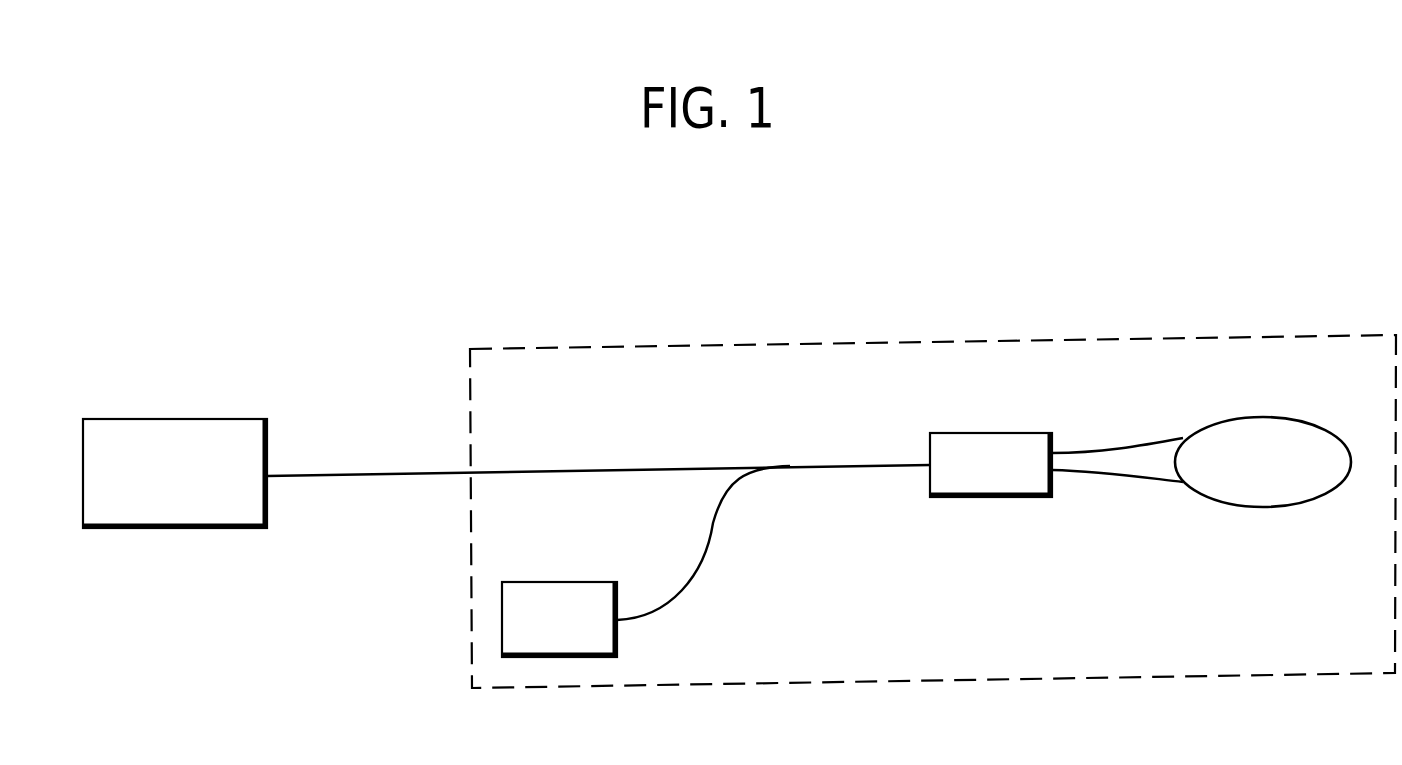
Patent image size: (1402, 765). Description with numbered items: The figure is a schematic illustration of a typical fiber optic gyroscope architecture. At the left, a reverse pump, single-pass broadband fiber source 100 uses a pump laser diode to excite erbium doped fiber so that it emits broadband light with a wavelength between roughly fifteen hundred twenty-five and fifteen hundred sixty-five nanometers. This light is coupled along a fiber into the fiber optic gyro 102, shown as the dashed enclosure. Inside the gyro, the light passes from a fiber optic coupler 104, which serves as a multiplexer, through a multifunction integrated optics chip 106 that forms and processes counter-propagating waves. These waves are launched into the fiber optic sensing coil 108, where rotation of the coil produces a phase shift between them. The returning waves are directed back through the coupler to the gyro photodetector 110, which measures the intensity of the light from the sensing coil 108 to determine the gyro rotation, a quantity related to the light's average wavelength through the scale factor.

The broadband fiber source 100 is at (173, 528).
The fiber optic gyro 102 is at (571, 347).
The fiber optic coupler 104 is at (790, 465).
The multifunction integrated optics chip 106 is at (985, 433).
The fiber optic sensing coil 108 is at (1258, 417).
The gyro photodetector 110 is at (617, 633).